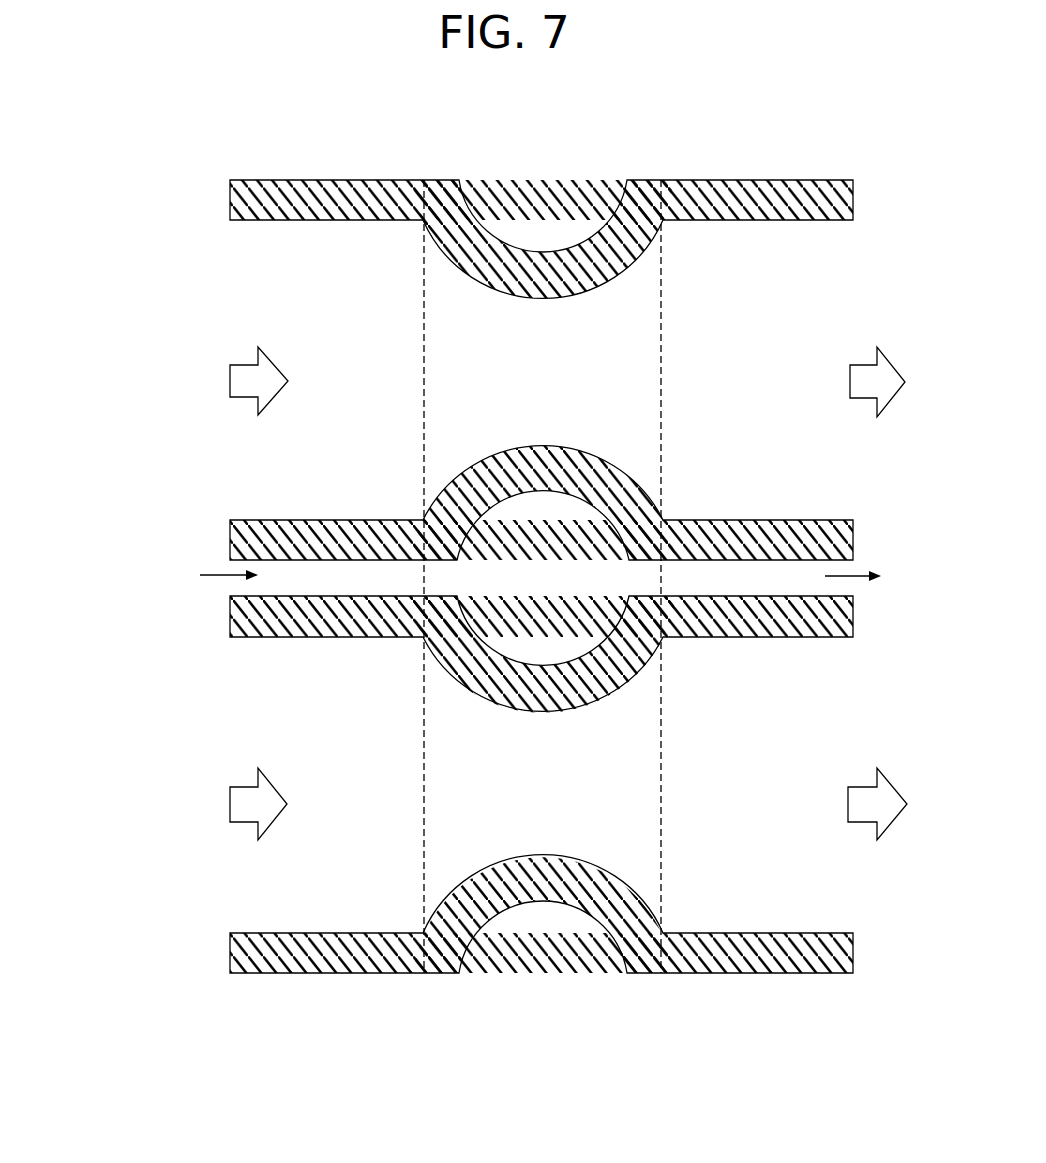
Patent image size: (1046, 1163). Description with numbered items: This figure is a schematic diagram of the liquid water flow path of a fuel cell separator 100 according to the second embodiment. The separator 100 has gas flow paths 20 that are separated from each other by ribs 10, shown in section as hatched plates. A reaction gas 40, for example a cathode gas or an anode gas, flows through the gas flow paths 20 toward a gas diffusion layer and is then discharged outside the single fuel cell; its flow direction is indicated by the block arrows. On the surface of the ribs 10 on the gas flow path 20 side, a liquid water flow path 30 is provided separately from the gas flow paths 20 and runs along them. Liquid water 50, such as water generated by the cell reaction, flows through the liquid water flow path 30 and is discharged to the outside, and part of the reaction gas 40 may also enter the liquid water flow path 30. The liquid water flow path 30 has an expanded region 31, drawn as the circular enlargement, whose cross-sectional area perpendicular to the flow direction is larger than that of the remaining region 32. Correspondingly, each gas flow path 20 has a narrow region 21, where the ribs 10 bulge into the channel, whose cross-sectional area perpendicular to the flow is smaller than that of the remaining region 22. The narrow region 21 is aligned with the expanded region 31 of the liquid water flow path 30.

The fuel cell separator 100 is at (178, 407).
The rib 10 is at (233, 206).
The gas flow path 20 is at (850, 247).
The narrow region 21 is at (560, 355).
The remaining region of the gas flow path 22 is at (705, 377).
The liquid water flow path 30 is at (860, 430).
The expanded region 31 is at (560, 546).
The remaining region of the liquid water flow path 32 is at (695, 568).
The reaction gas 40 is at (250, 378).
The liquid water 50 is at (205, 575).